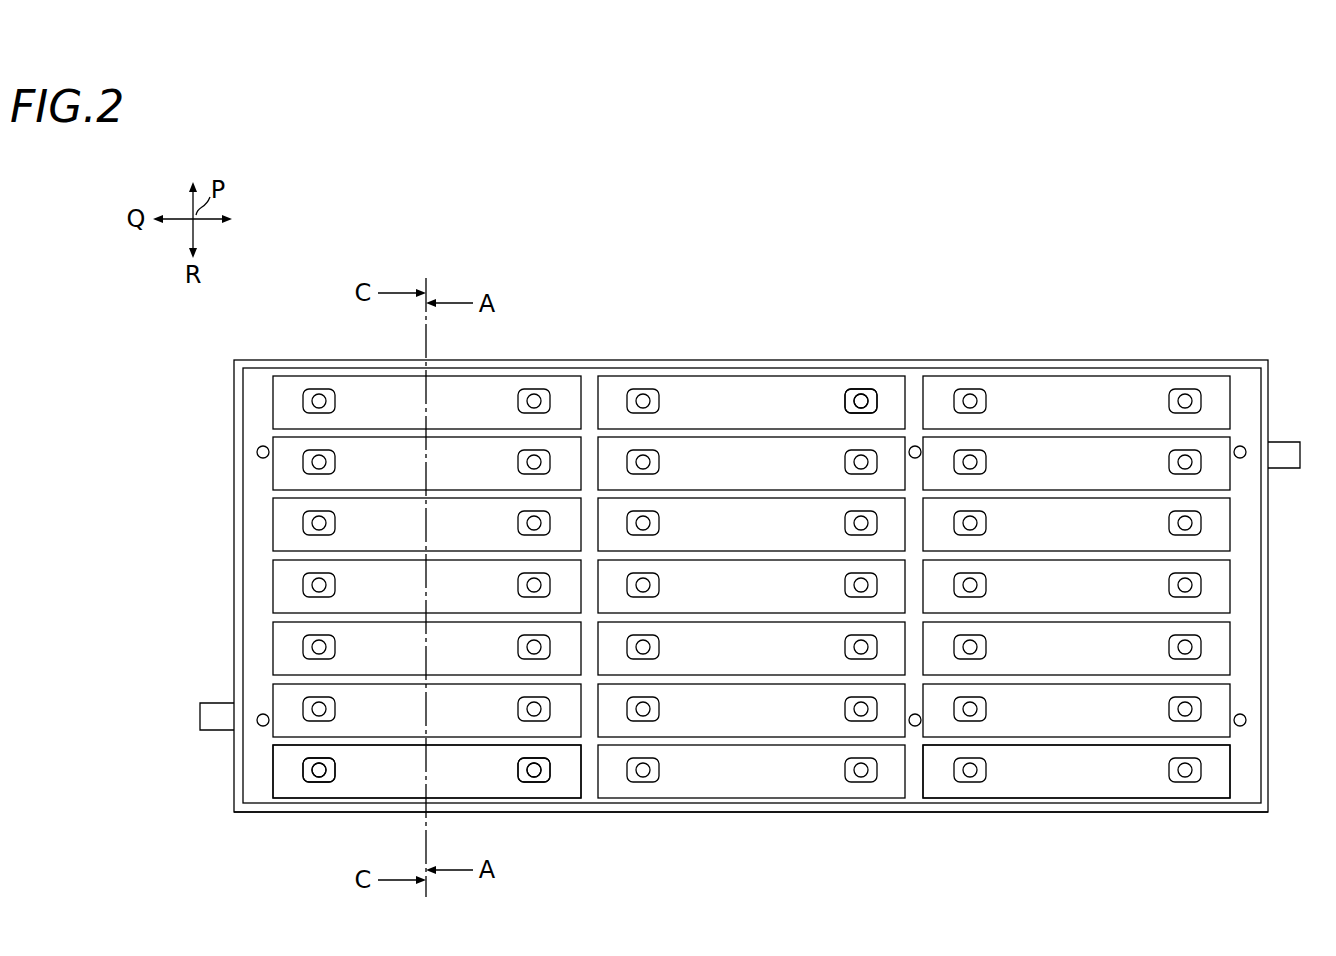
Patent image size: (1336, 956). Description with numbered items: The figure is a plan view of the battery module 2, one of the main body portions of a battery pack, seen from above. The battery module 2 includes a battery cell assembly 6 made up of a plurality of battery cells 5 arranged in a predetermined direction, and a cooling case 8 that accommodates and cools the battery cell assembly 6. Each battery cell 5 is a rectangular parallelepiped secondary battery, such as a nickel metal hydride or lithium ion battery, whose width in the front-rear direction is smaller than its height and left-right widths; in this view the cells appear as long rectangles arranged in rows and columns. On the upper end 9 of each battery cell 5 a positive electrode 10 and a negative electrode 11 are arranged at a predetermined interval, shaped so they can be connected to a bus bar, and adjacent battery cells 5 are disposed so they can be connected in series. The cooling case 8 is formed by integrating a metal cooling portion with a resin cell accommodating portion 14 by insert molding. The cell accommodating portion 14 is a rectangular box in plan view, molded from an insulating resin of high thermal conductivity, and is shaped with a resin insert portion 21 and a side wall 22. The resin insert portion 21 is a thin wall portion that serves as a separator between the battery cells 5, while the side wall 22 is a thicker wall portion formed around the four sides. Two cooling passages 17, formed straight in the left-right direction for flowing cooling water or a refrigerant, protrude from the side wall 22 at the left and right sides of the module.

The battery module 2 is at (740, 587).
The battery cell 5 is at (733, 392).
The battery cell assembly 6 is at (821, 382).
The cooling case 8 is at (245, 815).
The upper end 9 is at (490, 782).
The positive electrode 10 is at (308, 782).
The negative electrode 11 is at (543, 782).
The cell accommodating portion 14 is at (771, 815).
The cooling passage 17 is at (220, 703).
The resin insert portion 21 is at (1007, 742).
The side wall 22 is at (915, 812).